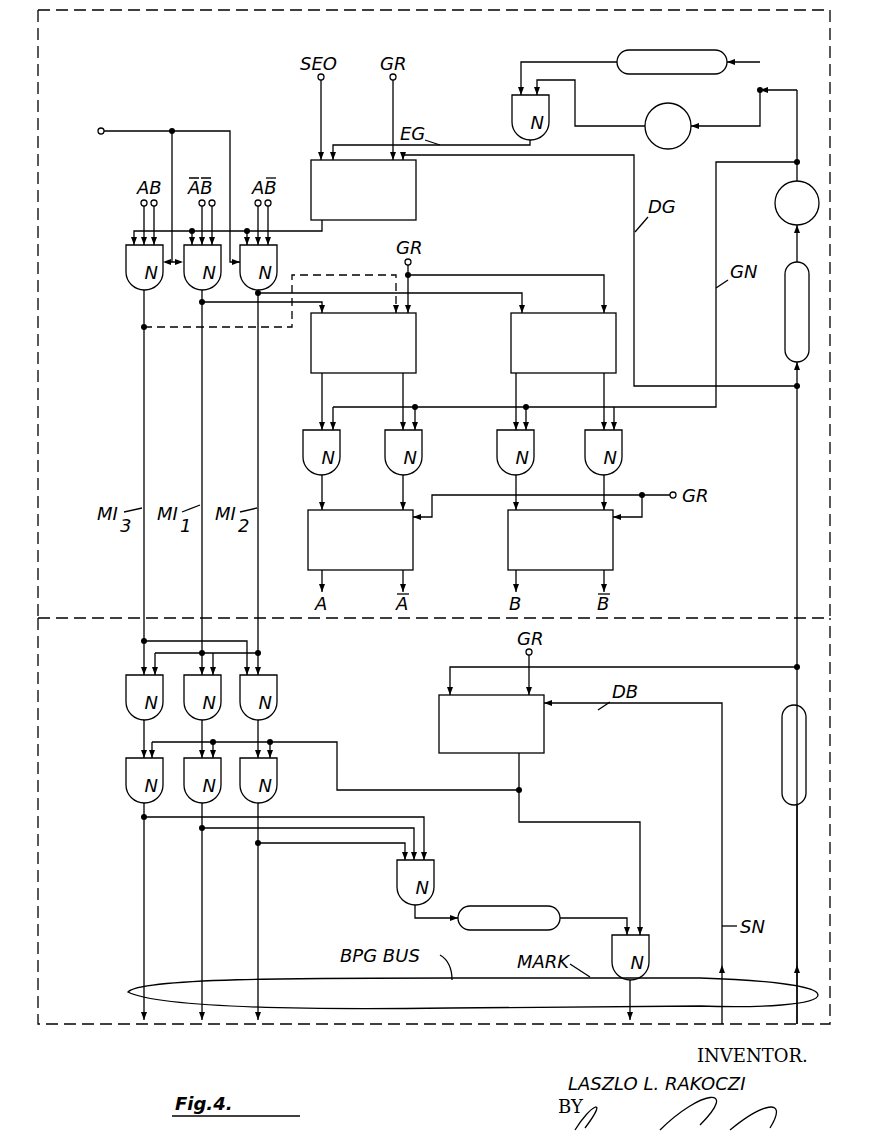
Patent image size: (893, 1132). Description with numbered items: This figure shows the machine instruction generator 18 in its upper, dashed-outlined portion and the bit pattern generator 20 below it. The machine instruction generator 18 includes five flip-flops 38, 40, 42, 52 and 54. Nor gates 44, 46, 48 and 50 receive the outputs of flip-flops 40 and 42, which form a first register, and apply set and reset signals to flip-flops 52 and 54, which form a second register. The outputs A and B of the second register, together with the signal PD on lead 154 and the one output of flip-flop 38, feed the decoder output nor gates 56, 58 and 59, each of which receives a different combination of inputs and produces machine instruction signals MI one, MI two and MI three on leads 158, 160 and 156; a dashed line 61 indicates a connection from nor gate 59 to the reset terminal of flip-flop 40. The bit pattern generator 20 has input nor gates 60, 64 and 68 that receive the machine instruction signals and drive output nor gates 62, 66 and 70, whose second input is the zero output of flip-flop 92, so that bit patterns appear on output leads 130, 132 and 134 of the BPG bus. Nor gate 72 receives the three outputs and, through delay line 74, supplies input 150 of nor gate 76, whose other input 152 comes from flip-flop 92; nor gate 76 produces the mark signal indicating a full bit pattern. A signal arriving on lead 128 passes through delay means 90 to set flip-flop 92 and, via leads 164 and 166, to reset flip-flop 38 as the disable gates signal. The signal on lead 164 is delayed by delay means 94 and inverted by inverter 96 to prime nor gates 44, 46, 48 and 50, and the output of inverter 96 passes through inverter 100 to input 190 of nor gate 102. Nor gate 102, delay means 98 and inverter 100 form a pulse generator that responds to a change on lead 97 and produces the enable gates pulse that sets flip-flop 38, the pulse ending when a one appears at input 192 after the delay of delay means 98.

The machine instruction generator 18 is at (434, 314).
The bit pattern generator 20 is at (434, 821).
The flip-flop 38 is at (418, 206).
The flip-flop 40 is at (418, 340).
The flip-flop 42 is at (511, 346).
The nor gate 44 is at (340, 470).
The nor gate 46 is at (422, 470).
The nor gate 48 is at (534, 470).
The nor gate 50 is at (622, 470).
The flip-flop 52 is at (413, 556).
The flip-flop 54 is at (613, 556).
The nor gate 56 is at (189, 285).
The nor gate 58 is at (250, 287).
The nor gate 59 is at (130, 285).
The nor gate 60 is at (126, 700).
The dashed line 61 is at (321, 282).
The nor gate 62 is at (126, 781).
The nor gate 64 is at (220, 712).
The nor gate 66 is at (221, 790).
The nor gate 68 is at (277, 705).
The nor gate 70 is at (277, 785).
The nor gate 72 is at (397, 876).
The delay line 74 is at (530, 906).
The nor gate 76 is at (650, 968).
The delay means 90 is at (782, 758).
The flip-flop 92 is at (439, 724).
The delay means 94 is at (785, 350).
The inverter 96 is at (775, 206).
The lead 97 is at (803, 80).
The delay means 98 is at (648, 50).
The inverter 100 is at (655, 148).
The nor gate 102 is at (512, 118).
The lead 128 is at (795, 850).
The output lead 130 is at (142, 874).
The output lead 132 is at (200, 897).
The output lead 134 is at (257, 917).
The input lead 150 is at (612, 924).
The input lead 152 is at (642, 910).
The lead 154 is at (172, 131).
The lead 156 is at (142, 572).
The lead 158 is at (200, 572).
The lead 160 is at (257, 572).
The lead 164 is at (795, 446).
The lead 166 is at (637, 316).
The input lead 190 is at (577, 110).
The input lead 192 is at (521, 62).